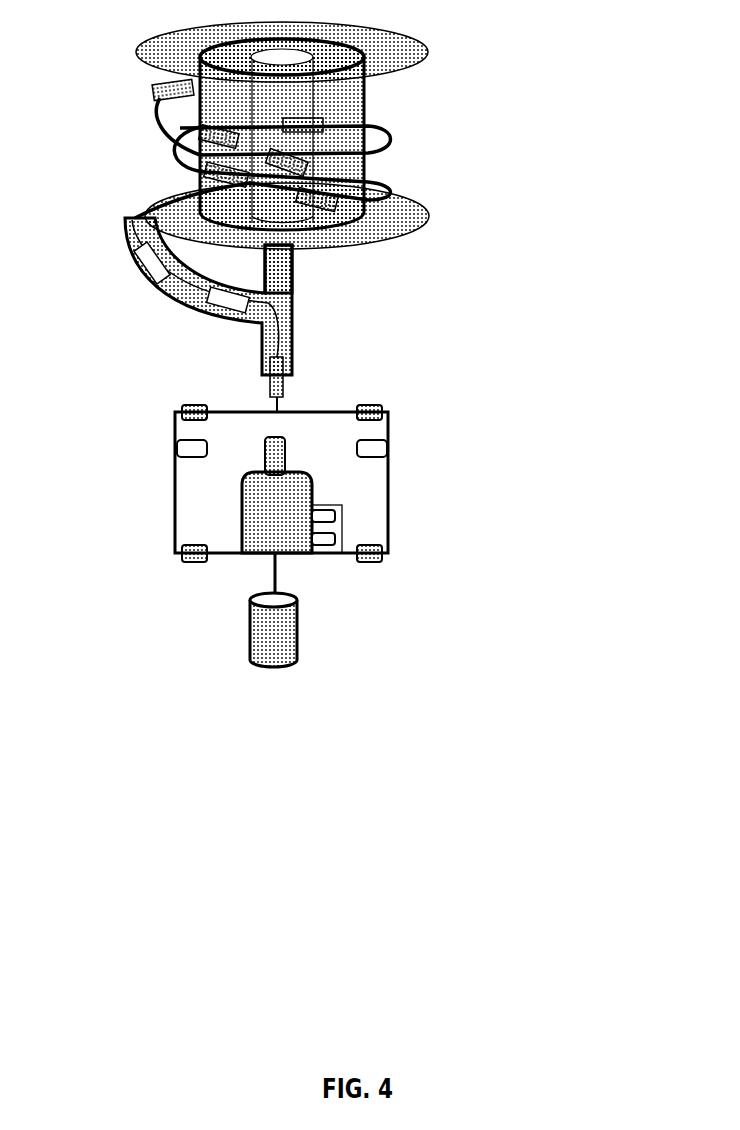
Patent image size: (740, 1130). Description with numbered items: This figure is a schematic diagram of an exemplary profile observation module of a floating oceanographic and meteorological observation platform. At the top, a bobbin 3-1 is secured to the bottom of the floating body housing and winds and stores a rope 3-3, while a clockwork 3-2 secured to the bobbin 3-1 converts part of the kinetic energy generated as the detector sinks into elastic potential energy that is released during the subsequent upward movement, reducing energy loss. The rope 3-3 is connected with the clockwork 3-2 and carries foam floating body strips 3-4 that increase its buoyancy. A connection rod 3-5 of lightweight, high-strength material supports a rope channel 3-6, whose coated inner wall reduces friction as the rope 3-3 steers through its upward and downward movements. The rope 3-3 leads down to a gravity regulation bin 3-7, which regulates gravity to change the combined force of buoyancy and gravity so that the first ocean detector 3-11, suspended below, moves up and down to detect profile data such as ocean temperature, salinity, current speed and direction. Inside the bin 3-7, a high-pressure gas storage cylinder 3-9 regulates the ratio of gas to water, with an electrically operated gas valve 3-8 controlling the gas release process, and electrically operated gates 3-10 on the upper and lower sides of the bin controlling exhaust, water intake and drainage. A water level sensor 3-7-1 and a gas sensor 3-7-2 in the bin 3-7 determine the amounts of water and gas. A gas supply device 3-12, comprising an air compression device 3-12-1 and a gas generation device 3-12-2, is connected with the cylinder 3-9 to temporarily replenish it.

The bobbin 3-1 is at (297, 50).
The clockwork 3-2 is at (367, 98).
The rope 3-3 is at (387, 138).
The floating body strips 3-4 is at (372, 165).
The connection rod 3-5 is at (278, 266).
The rope channel 3-6 is at (292, 310).
The gravity regulation bin 3-7 is at (340, 427).
The water level sensor 3-7-1 is at (375, 448).
The gas sensor 3-7-2 is at (193, 448).
The electrically operated gas valve 3-8 is at (280, 462).
The high-pressure gas storage cylinder 3-9 is at (278, 503).
The electrically operated gates 3-10 is at (385, 554).
The first ocean detector 3-11 is at (275, 630).
The gas supply device 3-12 is at (356, 533).
The air compression device 3-12-1 is at (335, 514).
The gas generation device 3-12-2 is at (335, 540).